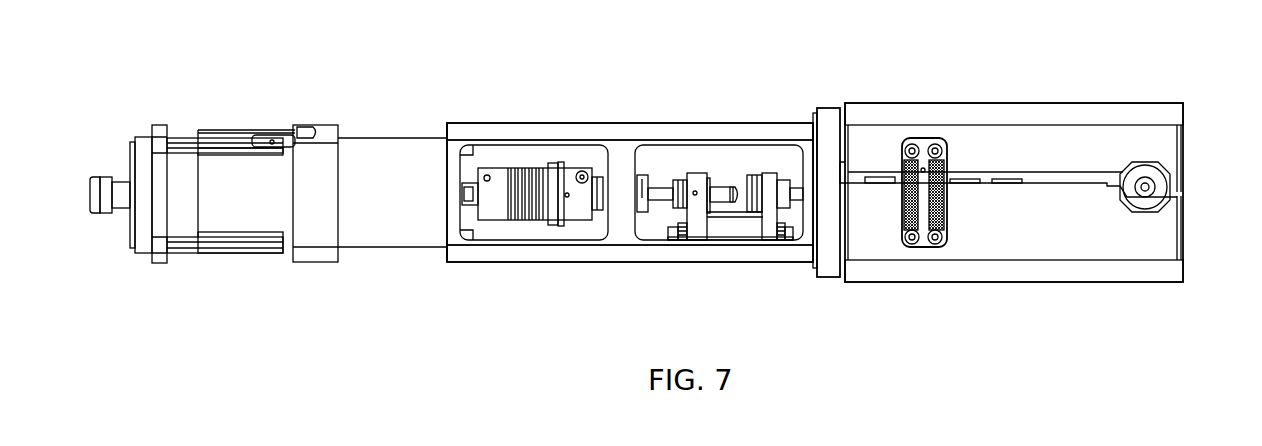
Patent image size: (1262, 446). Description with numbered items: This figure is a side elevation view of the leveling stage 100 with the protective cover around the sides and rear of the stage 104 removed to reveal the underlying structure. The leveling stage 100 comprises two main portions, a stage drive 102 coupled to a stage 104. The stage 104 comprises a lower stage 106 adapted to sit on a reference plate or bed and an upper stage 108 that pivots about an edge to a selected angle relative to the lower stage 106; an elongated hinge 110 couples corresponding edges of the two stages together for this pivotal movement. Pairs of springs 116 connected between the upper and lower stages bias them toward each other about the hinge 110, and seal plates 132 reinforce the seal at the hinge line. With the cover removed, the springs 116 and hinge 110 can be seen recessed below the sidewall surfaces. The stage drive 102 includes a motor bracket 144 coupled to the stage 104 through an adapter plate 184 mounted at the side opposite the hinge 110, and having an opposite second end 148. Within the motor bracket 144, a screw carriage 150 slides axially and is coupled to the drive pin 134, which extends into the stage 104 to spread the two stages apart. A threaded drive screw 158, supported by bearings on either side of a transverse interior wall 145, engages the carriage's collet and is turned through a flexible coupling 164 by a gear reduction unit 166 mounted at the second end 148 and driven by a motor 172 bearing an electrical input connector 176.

The leveling stage 100 is at (672, 174).
The stage drive 102 is at (597, 189).
The stage 104 is at (1049, 197).
The lower stage 106 is at (1090, 273).
The upper stage 108 is at (1163, 110).
The hinge 110 is at (1163, 185).
The springs 116 is at (945, 202).
The seal plates 132 is at (1183, 140).
The drive pin 134 is at (797, 187).
The motor bracket 144 is at (530, 133).
The transverse interior wall 145 is at (620, 237).
The second end 148 is at (447, 132).
The screw carriage 150 is at (735, 232).
The drive screw 158 is at (660, 190).
The flexible coupling 164 is at (523, 222).
The gear reduction unit 166 is at (395, 242).
The motor 172 is at (248, 217).
The electrical input connector 176 is at (112, 208).
The adapter plate 184 is at (832, 268).